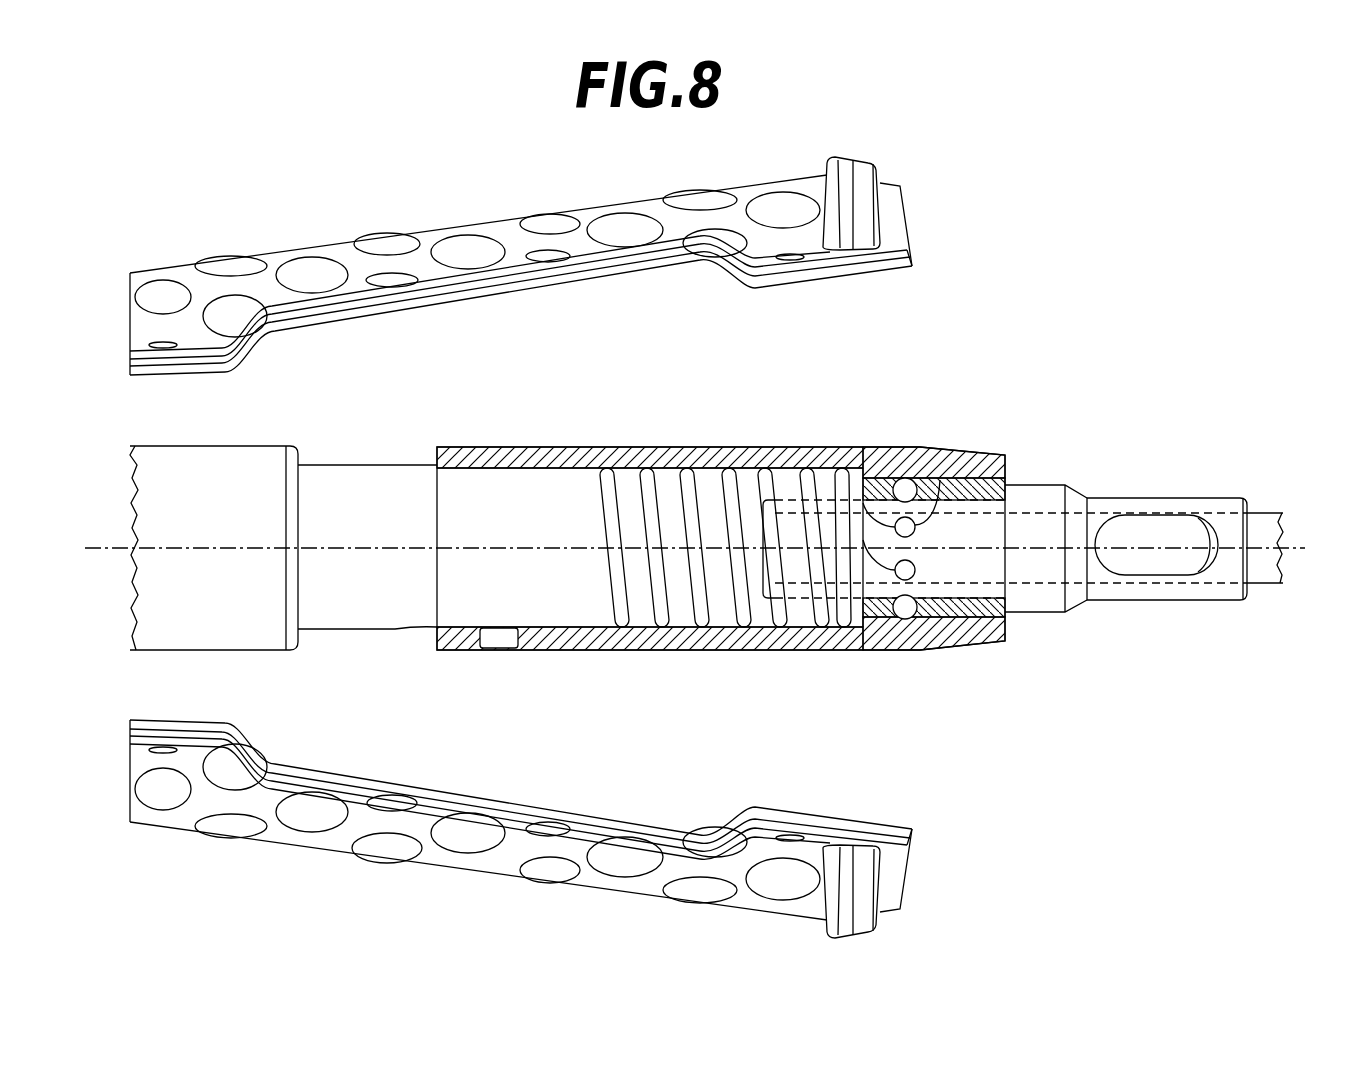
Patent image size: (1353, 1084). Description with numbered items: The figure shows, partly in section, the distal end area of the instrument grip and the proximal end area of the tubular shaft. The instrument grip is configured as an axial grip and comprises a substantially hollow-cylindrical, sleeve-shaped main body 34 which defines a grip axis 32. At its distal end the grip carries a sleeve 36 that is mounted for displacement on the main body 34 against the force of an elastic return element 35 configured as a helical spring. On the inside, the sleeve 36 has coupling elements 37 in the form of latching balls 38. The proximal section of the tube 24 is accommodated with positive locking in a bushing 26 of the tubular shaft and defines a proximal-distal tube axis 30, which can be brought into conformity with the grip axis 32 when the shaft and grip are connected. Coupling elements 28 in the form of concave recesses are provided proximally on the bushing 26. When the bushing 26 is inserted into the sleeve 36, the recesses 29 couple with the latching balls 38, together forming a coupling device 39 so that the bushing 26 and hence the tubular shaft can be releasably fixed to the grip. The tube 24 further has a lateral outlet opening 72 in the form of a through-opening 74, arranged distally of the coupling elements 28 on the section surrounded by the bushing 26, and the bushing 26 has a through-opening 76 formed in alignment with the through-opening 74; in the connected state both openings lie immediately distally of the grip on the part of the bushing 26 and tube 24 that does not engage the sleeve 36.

The tube 24 is at (1265, 567).
The bushing 26 is at (1042, 507).
The coupling elements 28 is at (915, 570).
The recesses 29 is at (895, 527).
The tube axis 30 is at (1305, 548).
The grip axis 32 is at (92, 548).
The main body 34 is at (347, 600).
The elastic return element 35 is at (650, 490).
The sleeve 36 is at (777, 633).
The coupling elements 37 is at (897, 612).
The latching balls 38 is at (906, 614).
The coupling device 39 is at (915, 567).
The lateral outlet opening 72 is at (1122, 537).
The through-opening 74 is at (1160, 537).
The through-opening 76 is at (1200, 517).